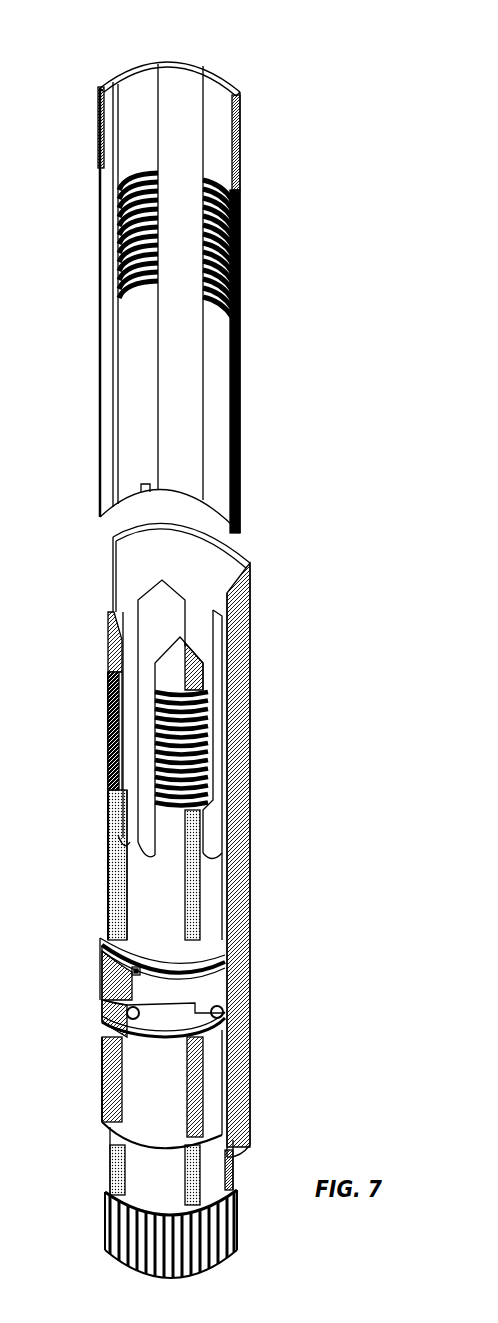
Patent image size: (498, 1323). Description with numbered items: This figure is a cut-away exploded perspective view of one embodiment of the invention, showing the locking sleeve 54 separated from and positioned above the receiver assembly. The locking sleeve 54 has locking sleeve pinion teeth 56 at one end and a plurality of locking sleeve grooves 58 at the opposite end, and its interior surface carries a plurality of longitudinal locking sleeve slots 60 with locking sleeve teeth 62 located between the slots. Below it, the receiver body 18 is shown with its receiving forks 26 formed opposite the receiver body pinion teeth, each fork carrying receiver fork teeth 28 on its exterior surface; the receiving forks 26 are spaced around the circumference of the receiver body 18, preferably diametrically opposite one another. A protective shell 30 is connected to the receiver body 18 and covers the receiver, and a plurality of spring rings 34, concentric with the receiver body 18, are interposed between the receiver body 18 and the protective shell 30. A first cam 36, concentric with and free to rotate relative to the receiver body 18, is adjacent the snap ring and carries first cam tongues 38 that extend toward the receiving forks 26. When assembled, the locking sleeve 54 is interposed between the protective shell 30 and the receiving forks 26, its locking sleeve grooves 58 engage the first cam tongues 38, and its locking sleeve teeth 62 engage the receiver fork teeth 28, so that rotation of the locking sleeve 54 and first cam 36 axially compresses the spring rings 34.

The receiver body 18 is at (112, 900).
The receiving forks 26 is at (108, 650).
The receiver fork teeth 28 is at (110, 700).
The protective shell 30 is at (240, 622).
The spring ring 34 is at (112, 1082).
The first cam 36 is at (113, 980).
The first cam tongues 38 is at (137, 966).
The locking sleeve 54 is at (240, 363).
The locking sleeve pinion teeth 56 is at (233, 83).
The locking sleeve grooves 58 is at (147, 492).
The locking sleeve slots 60 is at (180, 83).
The locking sleeve teeth 62 is at (117, 243).